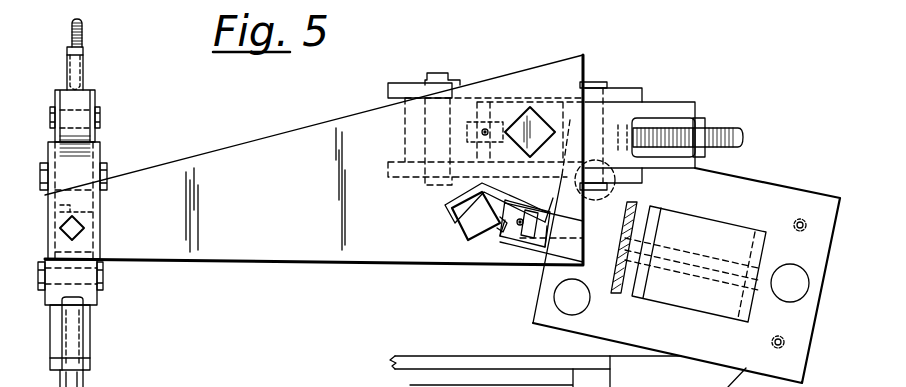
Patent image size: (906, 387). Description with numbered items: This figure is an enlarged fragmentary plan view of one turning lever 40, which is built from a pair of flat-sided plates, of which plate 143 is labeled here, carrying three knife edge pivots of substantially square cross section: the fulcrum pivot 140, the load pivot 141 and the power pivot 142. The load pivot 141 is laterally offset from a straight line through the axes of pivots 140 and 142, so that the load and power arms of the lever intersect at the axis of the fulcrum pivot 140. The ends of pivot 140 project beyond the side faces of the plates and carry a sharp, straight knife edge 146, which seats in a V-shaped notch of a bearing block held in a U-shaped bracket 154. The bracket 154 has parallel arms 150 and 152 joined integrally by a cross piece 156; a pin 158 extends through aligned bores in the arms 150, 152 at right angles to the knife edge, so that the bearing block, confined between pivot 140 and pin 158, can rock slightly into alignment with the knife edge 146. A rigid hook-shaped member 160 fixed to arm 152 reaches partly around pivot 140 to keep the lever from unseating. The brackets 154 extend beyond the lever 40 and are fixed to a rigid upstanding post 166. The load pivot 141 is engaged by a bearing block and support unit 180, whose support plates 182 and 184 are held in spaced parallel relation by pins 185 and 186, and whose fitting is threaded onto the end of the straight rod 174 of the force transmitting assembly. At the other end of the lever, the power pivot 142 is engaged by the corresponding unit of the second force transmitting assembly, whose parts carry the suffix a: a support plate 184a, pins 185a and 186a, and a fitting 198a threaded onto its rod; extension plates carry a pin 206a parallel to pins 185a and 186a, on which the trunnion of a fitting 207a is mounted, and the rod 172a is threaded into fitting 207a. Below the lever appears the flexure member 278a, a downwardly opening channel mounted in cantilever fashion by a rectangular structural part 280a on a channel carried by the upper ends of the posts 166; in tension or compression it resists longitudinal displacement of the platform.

The lever 40 is at (360, 270).
The flat-sided plate 143 is at (318, 197).
The rod 172a is at (83, 42).
The fitting 207a is at (84, 74).
The pin 206a is at (100, 118).
The pin 185a is at (107, 175).
The power knife edge pivot 142 is at (84, 228).
The pin 186a is at (104, 279).
The support plate 184a is at (45, 297).
The fitting 198a is at (91, 340).
The support plate 184 is at (400, 83).
The pin 185 is at (441, 76).
The load knife edge pivot 141 is at (534, 112).
The pin 186 is at (599, 82).
The bearing block and support unit 180 is at (662, 101).
The rod 174 is at (726, 128).
The support plate 182 is at (623, 204).
The post 166 is at (660, 213).
The pin 158 is at (570, 232).
The hook-shaped member 160 is at (447, 208).
The fulcrum knife edge pivot 140 is at (470, 229).
The knife edge 146 is at (498, 224).
The U-shaped bracket 154 is at (530, 249).
The arm 150 is at (507, 238).
The cross piece 156 is at (546, 257).
The arm 152 is at (514, 206).
The flexure member 278a is at (392, 365).
The structural part 280a is at (612, 381).